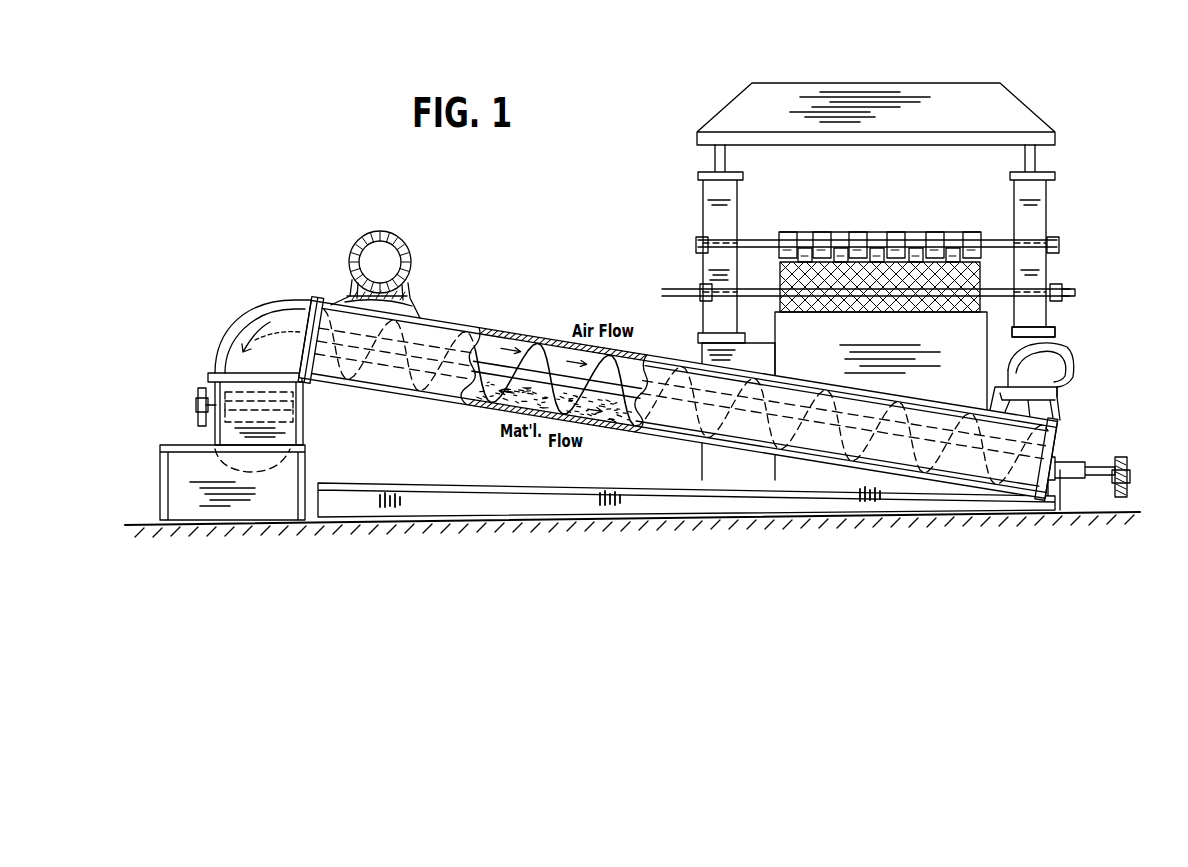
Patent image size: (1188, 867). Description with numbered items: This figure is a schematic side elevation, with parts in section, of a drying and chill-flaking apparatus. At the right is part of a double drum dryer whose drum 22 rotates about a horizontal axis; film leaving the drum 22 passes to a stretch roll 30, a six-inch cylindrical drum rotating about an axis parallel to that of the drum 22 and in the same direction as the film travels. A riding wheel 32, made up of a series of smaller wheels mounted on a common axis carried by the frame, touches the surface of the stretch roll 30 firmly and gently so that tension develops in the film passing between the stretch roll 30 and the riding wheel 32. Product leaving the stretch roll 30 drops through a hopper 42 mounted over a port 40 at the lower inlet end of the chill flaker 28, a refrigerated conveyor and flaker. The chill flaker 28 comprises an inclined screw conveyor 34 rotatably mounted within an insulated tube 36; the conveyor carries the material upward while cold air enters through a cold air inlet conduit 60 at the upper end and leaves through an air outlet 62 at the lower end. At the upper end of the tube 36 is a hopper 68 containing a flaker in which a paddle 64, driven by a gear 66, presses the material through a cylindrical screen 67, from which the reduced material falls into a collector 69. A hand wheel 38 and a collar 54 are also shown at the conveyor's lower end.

The cylindrical drum 22 is at (955, 240).
The chill flaker 28 is at (678, 392).
The stretch roll 30 is at (897, 289).
The riding wheel 32 is at (838, 255).
The inclined screw conveyor 34 is at (681, 400).
The insulated tube 36 is at (555, 401).
The hand wheel 38 is at (1128, 457).
The port 40 is at (961, 395).
The hopper 42 is at (975, 319).
The collar 54 is at (1053, 342).
The cold air inlet conduit 60 is at (418, 268).
The air outlet 62 is at (1065, 387).
The paddle 64 is at (304, 398).
The gear 66 is at (203, 390).
The cylindrical screen 67 is at (302, 423).
The hopper 68 is at (306, 437).
The collector 69 is at (180, 480).